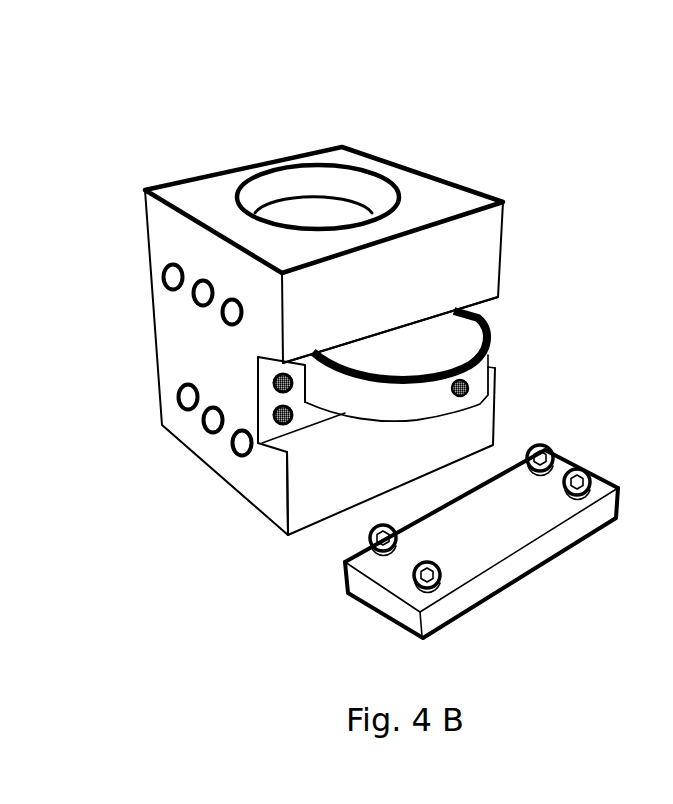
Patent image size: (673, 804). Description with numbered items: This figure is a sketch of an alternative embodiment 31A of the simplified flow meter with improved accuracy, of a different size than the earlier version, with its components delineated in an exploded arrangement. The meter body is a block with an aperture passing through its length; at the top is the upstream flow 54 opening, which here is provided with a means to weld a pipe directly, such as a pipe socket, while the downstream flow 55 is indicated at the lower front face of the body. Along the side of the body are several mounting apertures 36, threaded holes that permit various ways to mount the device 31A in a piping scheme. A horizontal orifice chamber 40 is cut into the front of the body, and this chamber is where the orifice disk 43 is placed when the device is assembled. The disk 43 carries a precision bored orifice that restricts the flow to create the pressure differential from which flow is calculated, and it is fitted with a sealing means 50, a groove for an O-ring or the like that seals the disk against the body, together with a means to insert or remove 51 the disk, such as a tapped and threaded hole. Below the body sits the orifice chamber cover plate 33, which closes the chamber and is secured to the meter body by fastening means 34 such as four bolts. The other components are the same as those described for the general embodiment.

The alternative embodiment of the simplified flow meter 31A is at (328, 398).
The upstream flow 54 is at (347, 176).
The threaded aperture for mounting of meter 36 is at (238, 450).
The orifice chamber 40 is at (521, 313).
The downstream flow 55 is at (259, 545).
The orifice disk 43 is at (328, 501).
The sealing means 50 is at (490, 355).
The means to insert/remove 51 is at (468, 390).
The orifice chamber cover plate 33 is at (399, 592).
The fastening means 34 is at (412, 588).